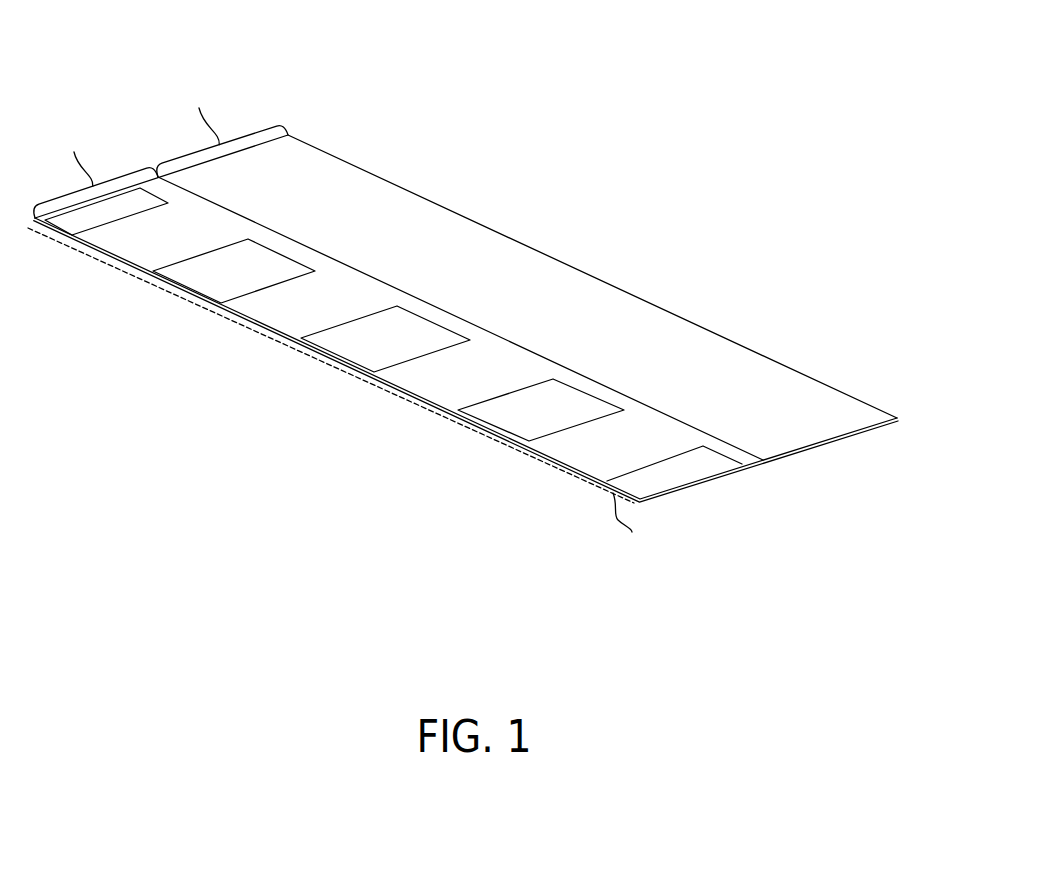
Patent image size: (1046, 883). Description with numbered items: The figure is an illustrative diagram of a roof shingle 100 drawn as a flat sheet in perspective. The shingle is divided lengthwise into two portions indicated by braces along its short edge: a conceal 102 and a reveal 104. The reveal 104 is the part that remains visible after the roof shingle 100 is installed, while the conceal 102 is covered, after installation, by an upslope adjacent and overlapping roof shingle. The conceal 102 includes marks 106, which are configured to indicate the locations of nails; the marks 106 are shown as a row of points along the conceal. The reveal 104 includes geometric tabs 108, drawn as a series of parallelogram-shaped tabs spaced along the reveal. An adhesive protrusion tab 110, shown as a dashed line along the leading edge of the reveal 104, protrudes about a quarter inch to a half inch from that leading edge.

The roof shingle 100 is at (721, 140).
The conceal 102 is at (197, 72).
The reveal 104 is at (67, 110).
The marks 106 is at (217, 200).
The geometric tabs 108 is at (633, 482).
The adhesive protrusion tab 110 is at (633, 635).